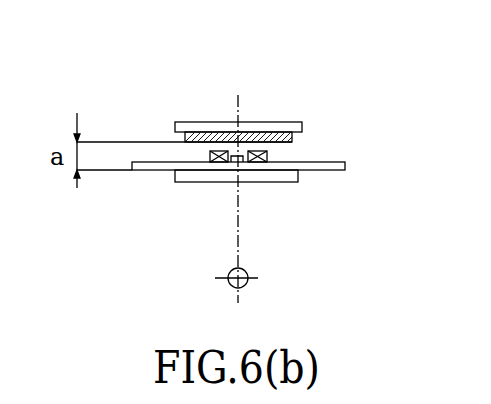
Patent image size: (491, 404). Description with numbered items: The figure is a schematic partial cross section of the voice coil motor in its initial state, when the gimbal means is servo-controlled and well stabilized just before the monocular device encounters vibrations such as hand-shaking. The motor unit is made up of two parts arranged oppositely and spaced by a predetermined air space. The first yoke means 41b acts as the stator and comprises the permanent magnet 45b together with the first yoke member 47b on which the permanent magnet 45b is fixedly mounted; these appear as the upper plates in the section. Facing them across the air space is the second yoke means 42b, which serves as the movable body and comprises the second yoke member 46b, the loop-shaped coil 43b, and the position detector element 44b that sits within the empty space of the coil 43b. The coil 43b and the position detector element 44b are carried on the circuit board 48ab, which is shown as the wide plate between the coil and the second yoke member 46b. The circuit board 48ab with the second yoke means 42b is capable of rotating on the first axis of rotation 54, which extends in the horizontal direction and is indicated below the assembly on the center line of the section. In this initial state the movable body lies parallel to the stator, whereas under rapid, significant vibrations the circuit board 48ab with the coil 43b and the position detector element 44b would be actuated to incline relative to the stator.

The first yoke means 41b is at (264, 82).
The first yoke member 47b is at (302, 122).
The loop-shaped coil 43b is at (221, 151).
The permanent magnet 45b is at (292, 142).
The circuit board 48ab is at (345, 167).
The second yoke member 46b is at (298, 180).
The position detector element 44b is at (232, 160).
The second yoke means 42b is at (267, 192).
The first axis of rotation 54 is at (242, 282).